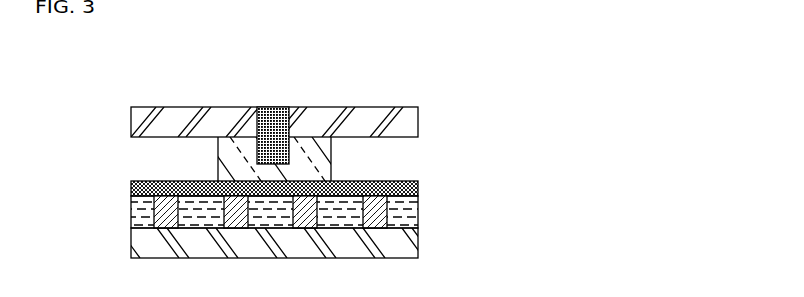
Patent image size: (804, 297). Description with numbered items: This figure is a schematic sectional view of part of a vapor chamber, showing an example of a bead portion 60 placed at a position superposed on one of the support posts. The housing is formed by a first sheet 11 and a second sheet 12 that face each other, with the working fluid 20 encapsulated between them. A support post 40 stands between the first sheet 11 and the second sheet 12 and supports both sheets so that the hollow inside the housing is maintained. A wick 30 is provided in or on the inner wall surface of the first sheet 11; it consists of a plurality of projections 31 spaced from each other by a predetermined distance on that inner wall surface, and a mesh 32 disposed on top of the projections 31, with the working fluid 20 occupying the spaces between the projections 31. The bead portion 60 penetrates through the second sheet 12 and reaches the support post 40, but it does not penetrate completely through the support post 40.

The first sheet 11 is at (405, 243).
The second sheet 12 is at (405, 120).
The working fluid 20 is at (142, 210).
The wick 30 is at (294, 203).
The projections 31 is at (274, 212).
The mesh 32 is at (413, 187).
The support post 40 is at (331, 152).
The bead portion 60 is at (263, 107).